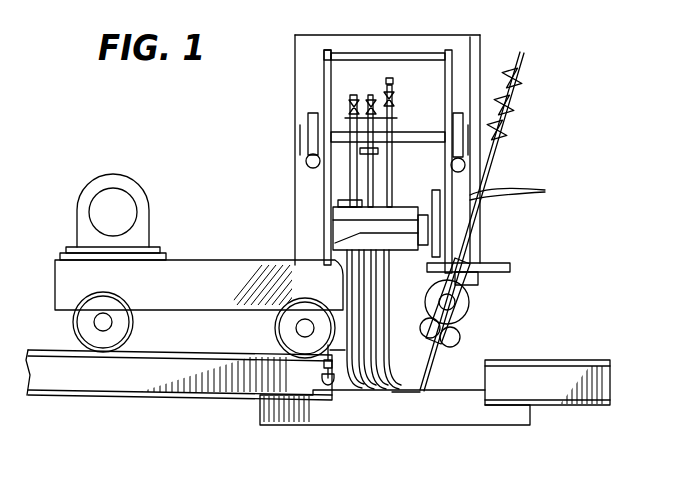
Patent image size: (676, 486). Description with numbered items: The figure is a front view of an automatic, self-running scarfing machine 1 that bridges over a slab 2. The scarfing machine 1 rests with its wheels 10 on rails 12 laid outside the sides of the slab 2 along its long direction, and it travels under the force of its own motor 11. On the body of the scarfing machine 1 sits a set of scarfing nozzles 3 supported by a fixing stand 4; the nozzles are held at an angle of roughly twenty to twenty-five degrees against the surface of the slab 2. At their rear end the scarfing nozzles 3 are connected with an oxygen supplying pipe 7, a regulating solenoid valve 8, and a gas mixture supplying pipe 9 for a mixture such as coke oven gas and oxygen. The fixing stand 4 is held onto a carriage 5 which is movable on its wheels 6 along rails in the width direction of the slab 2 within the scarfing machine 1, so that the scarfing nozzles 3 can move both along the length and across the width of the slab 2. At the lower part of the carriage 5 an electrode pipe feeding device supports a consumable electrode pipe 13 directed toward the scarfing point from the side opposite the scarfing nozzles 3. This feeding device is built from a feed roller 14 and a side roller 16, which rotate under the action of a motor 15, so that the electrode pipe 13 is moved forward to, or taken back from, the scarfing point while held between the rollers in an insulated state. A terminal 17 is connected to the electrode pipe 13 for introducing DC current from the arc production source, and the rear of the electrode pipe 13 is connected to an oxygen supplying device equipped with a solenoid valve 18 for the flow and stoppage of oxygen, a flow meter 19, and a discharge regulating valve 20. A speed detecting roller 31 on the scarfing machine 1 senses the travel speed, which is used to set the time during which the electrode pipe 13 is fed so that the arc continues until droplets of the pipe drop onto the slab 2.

The scarfing machine 1 is at (211, 202).
The slab 2 is at (358, 418).
The scarfing nozzles 3 is at (400, 395).
The fixing stand 4 is at (335, 212).
The carriage 5 is at (325, 60).
The wheels 6 is at (310, 118).
The oxygen supplying pipe 7 is at (372, 95).
The regulating solenoid valve 8 is at (416, 90).
The valve 9 is at (385, 92).
The wheels 10 is at (72, 325).
The motor 11 is at (98, 172).
The rails 12 is at (112, 400).
The consumable electrode pipe 13 is at (480, 200).
The feed roller 14 is at (462, 303).
The motor 15 is at (455, 318).
The side roller 16 is at (450, 340).
The terminal 17 is at (476, 188).
The solenoid valve 18 is at (500, 136).
The flow meter 19 is at (512, 112).
The discharge regulating valve 20 is at (518, 84).
The speed detecting roller 31 is at (328, 420).